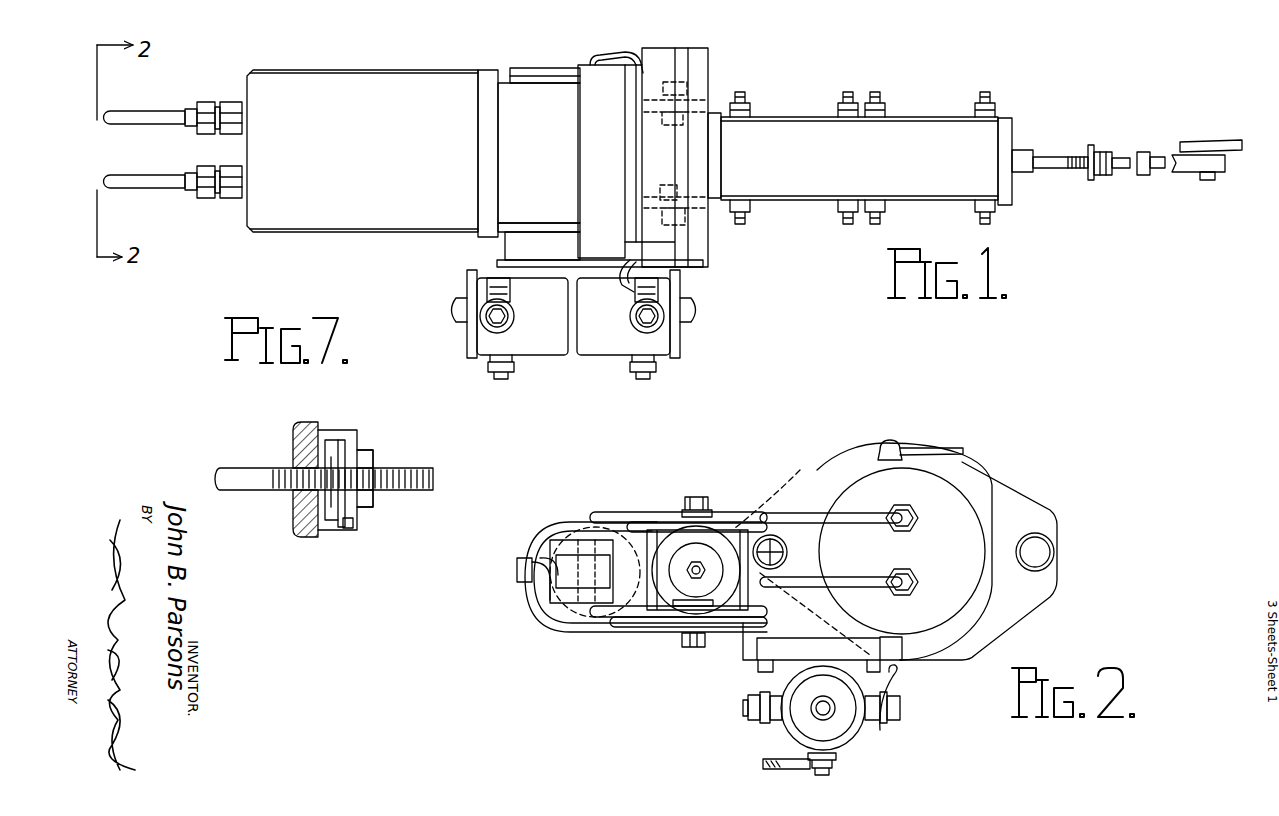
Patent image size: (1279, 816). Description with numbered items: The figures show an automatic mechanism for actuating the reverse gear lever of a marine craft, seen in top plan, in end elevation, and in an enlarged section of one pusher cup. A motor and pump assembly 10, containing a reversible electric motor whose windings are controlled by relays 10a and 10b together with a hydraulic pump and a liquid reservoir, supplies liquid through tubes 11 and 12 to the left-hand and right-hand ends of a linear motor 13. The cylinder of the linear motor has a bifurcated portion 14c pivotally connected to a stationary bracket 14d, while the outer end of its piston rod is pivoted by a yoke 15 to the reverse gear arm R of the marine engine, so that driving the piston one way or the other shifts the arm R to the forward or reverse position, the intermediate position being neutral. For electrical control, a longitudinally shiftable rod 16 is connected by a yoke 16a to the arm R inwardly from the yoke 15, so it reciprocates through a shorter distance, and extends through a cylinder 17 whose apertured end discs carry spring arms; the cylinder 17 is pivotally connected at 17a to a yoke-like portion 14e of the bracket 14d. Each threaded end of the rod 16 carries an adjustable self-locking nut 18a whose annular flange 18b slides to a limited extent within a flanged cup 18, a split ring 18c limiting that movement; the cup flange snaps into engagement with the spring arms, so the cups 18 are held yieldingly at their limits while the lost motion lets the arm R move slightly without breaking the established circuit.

In FIG. 1, the motor and pump assembly 10 is at (358, 91).
In FIG. 2, the motor and pump assembly 10 is at (948, 505).
In FIG. 1, the relay 10a is at (531, 357).
In FIG. 2, the relay 10a is at (847, 728).
In FIG. 1, the relay 10b is at (606, 357).
In FIG. 1, the tube 11 is at (148, 189).
In FIG. 2, the tube 11 is at (856, 578).
In FIG. 1, the tube 12 is at (149, 125).
In FIG. 2, the tube 12 is at (812, 512).
In FIG. 2, the linear motor 13 is at (553, 605).
In FIG. 2, the bifurcated portion 14c is at (537, 565).
In FIG. 2, the bracket 14d is at (614, 574).
In FIG. 2, the yoke-like portion 14e is at (632, 540).
In FIG. 1, the yoke 15 is at (1196, 173).
In FIG. 1, the longitudinally shiftable rod 16 is at (1073, 168).
In FIG. 7, the longitudinally shiftable rod 16 is at (240, 470).
In FIG. 1, the yoke 16a is at (1152, 175).
In FIG. 1, the cylinder 17 is at (790, 185).
In FIG. 2, the cylinder 17 is at (668, 546).
In FIG. 2, the pivotal connection 17a is at (791, 556).
In FIG. 7, the cup 18 is at (339, 530).
In FIG. 7, the self-locking nut 18a is at (366, 460).
In FIG. 7, the annular flange 18b is at (343, 440).
In FIG. 7, the split ring 18c is at (356, 526).
In FIG. 1, the reverse gear arm R is at (1203, 140).